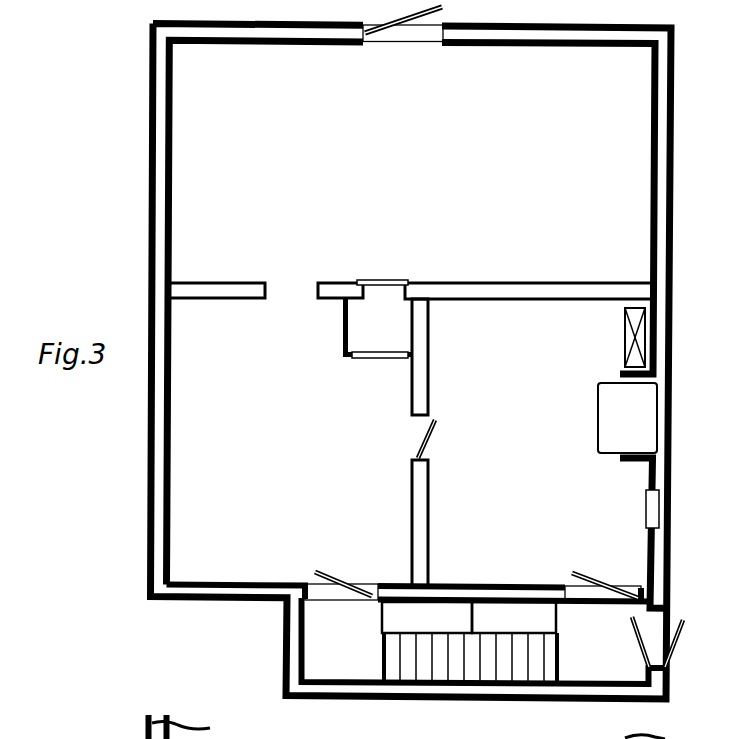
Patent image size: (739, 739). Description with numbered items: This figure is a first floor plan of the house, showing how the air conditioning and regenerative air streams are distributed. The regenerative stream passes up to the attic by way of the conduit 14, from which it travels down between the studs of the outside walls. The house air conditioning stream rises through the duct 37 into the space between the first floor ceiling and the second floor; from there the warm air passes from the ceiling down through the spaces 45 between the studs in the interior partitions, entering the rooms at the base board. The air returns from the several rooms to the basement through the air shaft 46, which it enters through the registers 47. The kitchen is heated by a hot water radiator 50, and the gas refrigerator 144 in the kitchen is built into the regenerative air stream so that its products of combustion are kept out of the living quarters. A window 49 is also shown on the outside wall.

The conduit 14 is at (395, 617).
The duct 37 is at (535, 617).
The spaces between the studs in the interior partitions 45 is at (233, 289).
The air shaft 46 is at (377, 326).
The register 47 is at (388, 280).
The window 49 is at (643, 510).
The hot water radiator 50 is at (625, 340).
The gas refrigerator 144 is at (612, 423).